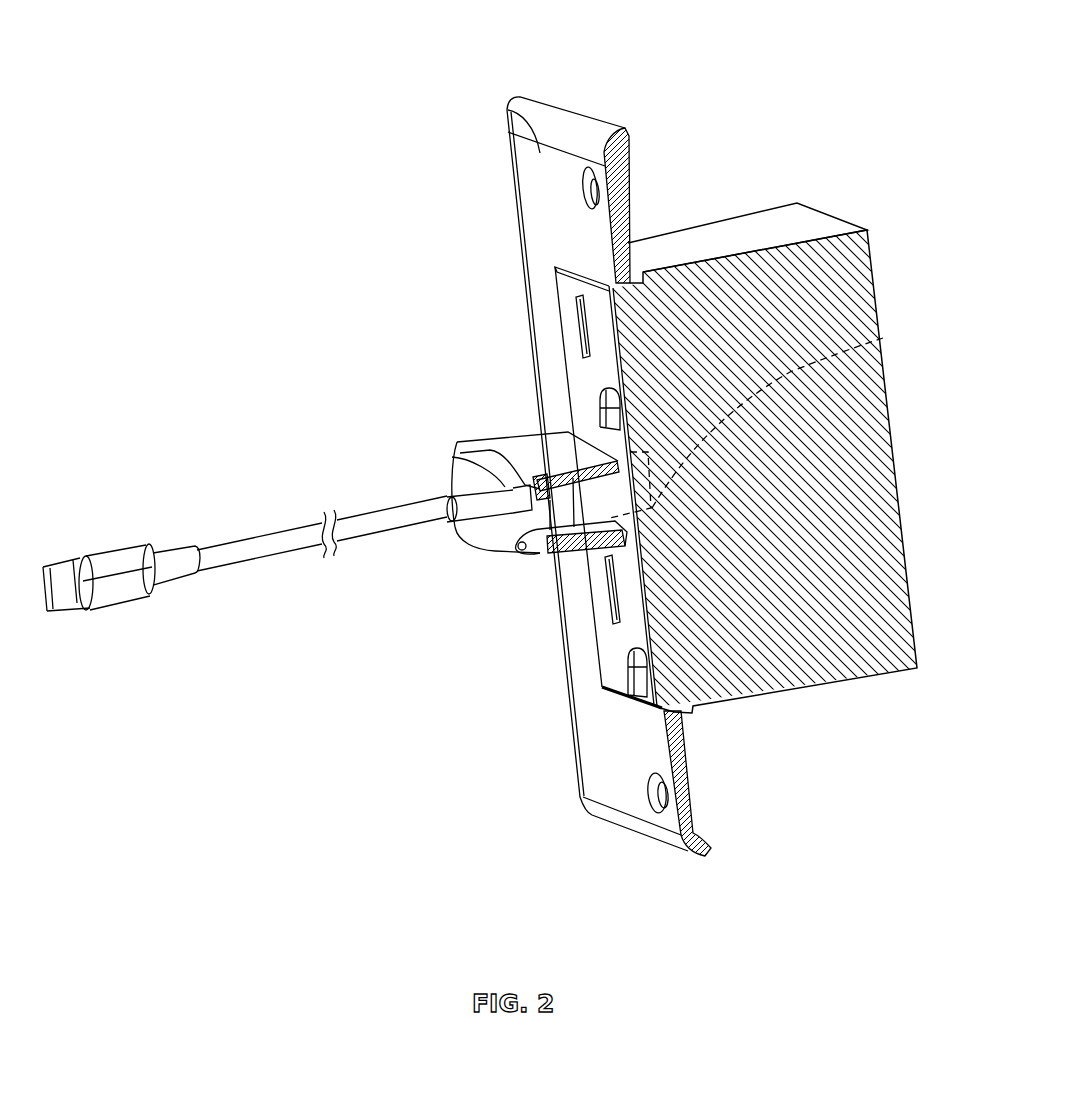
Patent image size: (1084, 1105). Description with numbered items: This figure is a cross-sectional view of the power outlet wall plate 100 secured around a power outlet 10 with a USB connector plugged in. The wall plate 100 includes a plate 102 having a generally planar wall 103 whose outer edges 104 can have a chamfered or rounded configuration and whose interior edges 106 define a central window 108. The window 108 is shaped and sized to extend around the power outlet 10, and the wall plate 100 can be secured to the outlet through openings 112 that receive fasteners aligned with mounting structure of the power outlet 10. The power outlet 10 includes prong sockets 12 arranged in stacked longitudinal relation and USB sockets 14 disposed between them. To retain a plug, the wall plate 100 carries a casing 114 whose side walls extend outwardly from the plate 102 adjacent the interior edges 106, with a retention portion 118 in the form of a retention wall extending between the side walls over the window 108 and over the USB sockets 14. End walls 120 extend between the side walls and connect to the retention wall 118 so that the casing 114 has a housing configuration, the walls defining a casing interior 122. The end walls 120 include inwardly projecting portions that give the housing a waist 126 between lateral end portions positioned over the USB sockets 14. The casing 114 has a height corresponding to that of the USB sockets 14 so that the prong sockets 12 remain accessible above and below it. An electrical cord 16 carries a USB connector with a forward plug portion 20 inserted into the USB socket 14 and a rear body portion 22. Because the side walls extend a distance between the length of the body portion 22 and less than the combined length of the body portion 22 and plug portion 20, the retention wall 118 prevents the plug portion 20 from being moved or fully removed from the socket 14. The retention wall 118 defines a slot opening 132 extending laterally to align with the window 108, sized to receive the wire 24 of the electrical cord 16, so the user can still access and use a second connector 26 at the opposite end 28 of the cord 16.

The power outlet wall plate 100 is at (256, 125).
The power outlet 10 is at (867, 327).
The plug portion 20 is at (883, 338).
The casing interior 122 is at (585, 498).
The USB socket 14 is at (642, 501).
The plate 102 is at (522, 152).
The planar wall 103 is at (507, 103).
The outer edges 104 is at (600, 135).
The openings 112 is at (583, 178).
The interior edges 106 is at (583, 268).
The central window 108 is at (558, 343).
The prong socket 12 is at (600, 397).
The end walls 120 is at (523, 457).
The casing 114 is at (453, 442).
The slot opening 132 is at (460, 465).
The retention portion 118 is at (480, 530).
The waist 126 is at (525, 548).
The body portion 22 is at (570, 518).
The electrical cord 16 is at (245, 576).
The wire 24 is at (253, 562).
The opposite end 28 is at (153, 583).
The second connector 26 is at (113, 604).